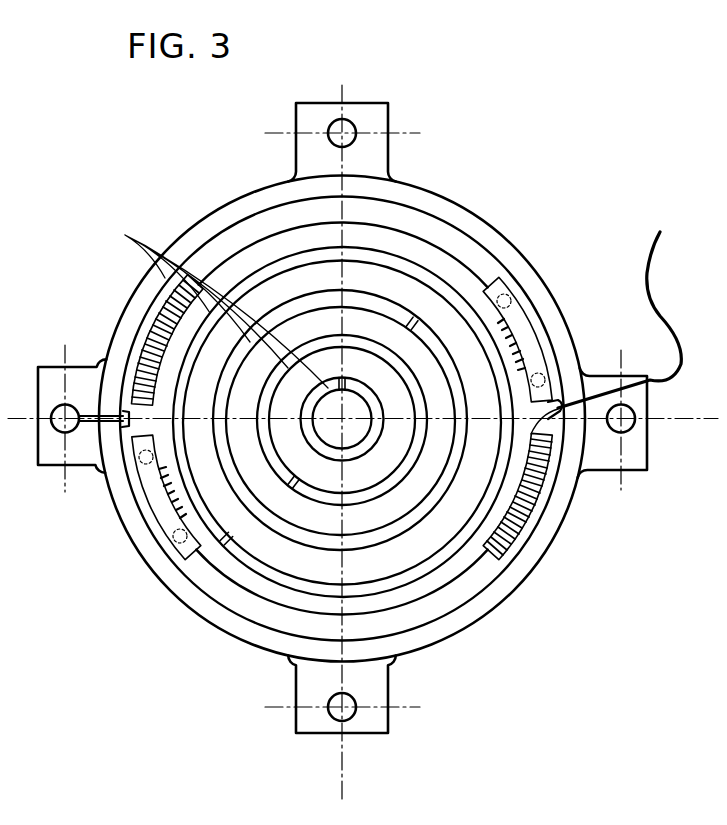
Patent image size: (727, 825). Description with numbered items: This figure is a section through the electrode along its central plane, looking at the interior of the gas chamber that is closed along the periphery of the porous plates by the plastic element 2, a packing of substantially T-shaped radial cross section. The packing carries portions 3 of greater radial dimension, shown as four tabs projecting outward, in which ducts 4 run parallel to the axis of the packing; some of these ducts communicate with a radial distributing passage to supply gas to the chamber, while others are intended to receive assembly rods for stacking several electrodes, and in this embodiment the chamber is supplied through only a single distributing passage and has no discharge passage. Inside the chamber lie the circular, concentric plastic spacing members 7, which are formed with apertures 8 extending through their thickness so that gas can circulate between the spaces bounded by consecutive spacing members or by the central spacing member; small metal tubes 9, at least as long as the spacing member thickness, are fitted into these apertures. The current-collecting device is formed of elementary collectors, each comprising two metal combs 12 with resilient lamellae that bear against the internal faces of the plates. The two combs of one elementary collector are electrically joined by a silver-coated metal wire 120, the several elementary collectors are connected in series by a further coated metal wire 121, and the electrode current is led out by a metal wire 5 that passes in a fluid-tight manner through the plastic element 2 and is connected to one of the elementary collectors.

The plastic element 2 is at (128, 520).
The portions 3 is at (76, 468).
The ducts 4 is at (58, 400).
The metal wire 5 is at (652, 249).
The spacing members 7 is at (212, 305).
The apertures 8 is at (296, 487).
The metal tubes 9 is at (288, 480).
The metal combs 12 is at (142, 335).
The metal wire 120 is at (120, 405).
The metal wire 121 is at (448, 243).